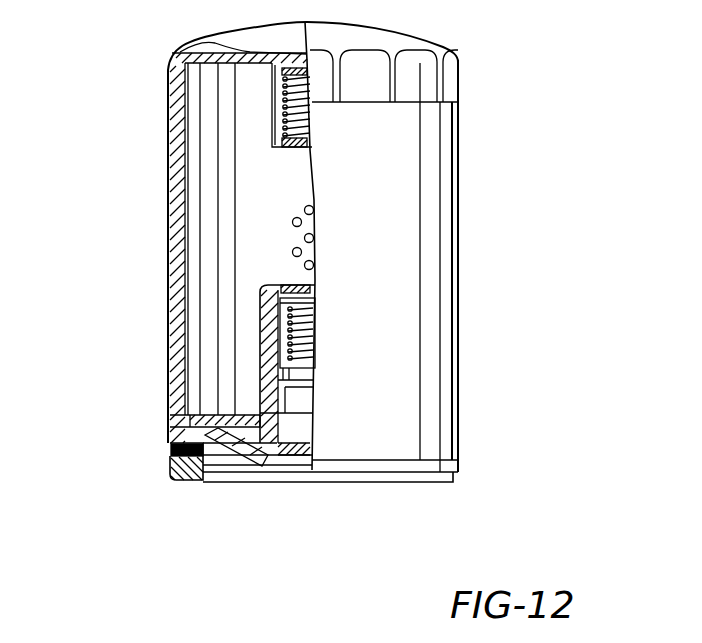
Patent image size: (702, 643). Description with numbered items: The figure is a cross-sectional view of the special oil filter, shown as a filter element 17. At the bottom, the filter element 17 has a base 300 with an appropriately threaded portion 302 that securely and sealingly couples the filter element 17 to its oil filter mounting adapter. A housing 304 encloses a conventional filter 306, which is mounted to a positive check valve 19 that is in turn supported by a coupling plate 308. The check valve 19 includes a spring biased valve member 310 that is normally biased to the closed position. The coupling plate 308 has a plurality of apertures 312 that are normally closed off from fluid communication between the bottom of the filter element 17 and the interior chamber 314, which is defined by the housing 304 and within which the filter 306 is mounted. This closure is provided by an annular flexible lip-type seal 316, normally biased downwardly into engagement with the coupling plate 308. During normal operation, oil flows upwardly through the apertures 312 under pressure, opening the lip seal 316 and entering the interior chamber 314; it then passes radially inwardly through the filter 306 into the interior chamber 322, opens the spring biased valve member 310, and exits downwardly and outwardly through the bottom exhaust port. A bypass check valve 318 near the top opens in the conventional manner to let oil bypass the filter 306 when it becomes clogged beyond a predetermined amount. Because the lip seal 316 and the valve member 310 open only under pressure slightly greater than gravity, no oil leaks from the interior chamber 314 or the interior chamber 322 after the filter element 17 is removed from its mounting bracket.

The filter element 17 is at (446, 201).
The positive check valve 19 is at (260, 330).
The base 300 is at (187, 483).
The threaded portion 302 is at (220, 483).
The housing 304 is at (455, 390).
The conventional filter 306 is at (178, 185).
The coupling plate 308 is at (167, 442).
The spring biased valve member 310 is at (300, 280).
The apertures 312 is at (285, 483).
The interior chamber 314 is at (193, 441).
The annular flexible lip-type seal 316 is at (223, 440).
The bypass check valve 318 is at (273, 100).
The interior chamber of the filter 322 is at (268, 189).